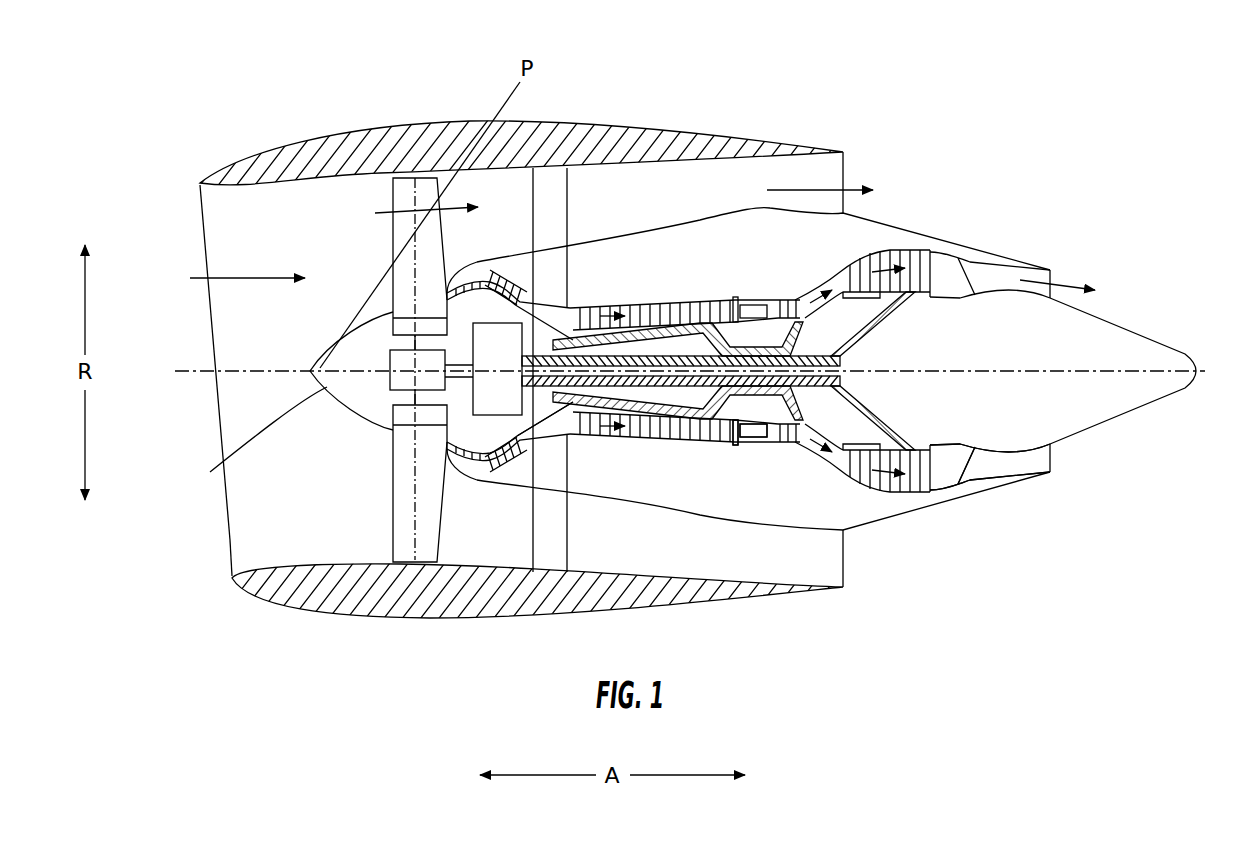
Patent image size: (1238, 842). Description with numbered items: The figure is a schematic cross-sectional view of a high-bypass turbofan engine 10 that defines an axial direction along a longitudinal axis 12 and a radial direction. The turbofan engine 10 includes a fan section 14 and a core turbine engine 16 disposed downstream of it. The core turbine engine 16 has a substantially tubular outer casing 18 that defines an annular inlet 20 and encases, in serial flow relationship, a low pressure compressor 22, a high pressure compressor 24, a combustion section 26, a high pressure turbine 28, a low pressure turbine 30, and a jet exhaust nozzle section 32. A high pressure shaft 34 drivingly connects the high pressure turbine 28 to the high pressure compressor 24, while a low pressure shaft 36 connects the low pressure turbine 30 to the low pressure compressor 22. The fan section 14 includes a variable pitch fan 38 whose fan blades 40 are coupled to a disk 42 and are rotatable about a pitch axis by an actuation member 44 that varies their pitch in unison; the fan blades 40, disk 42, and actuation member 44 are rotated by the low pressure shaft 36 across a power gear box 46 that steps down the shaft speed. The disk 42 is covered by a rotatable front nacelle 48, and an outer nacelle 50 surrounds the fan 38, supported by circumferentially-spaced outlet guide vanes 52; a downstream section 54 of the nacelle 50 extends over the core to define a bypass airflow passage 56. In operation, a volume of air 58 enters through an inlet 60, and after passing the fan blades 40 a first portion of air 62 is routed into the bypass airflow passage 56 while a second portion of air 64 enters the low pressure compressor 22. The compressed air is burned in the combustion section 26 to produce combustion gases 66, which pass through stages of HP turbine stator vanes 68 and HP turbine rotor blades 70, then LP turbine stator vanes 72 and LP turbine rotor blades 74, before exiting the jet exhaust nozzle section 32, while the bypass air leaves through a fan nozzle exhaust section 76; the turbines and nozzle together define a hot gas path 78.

The turbofan engine 10 is at (972, 130).
The longitudinal axis 12 is at (995, 368).
The fan section 14 is at (432, 86).
The core turbine engine 16 is at (722, 272).
The outer casing 18 is at (712, 523).
The annular inlet 20 is at (478, 480).
The low pressure compressor 22 is at (540, 440).
The high pressure compressor 24 is at (593, 432).
The combustion section 26 is at (750, 432).
The high pressure turbine 28 is at (862, 430).
The low pressure turbine 30 is at (920, 489).
The jet exhaust nozzle section 32 is at (975, 472).
The high pressure shaft 34 is at (787, 320).
The low pressure shaft 36 is at (872, 336).
The variable pitch fan 38 is at (362, 423).
The fan blades 40 is at (393, 508).
The disk 42 is at (410, 330).
The actuation member 44 is at (390, 366).
The power gear box 46 is at (513, 347).
The rotatable front nacelle 48 is at (253, 437).
The outer nacelle 50 is at (435, 618).
The outlet guide vanes 52 is at (567, 200).
The downstream section 54 is at (770, 145).
The bypass airflow passage 56 is at (765, 198).
The volume of air 58 is at (248, 272).
The inlet 60 is at (225, 570).
The first portion of air 62 is at (397, 204).
The second portion of air 64 is at (477, 262).
The combustion gases 66 is at (790, 297).
The HP turbine stator vanes 68 is at (765, 437).
The HP turbine rotor blades 70 is at (845, 398).
The LP turbine stator vanes 72 is at (858, 480).
The LP turbine rotor blades 74 is at (865, 487).
The fan nozzle exhaust section 76 is at (835, 178).
The hot gas path 78 is at (835, 275).